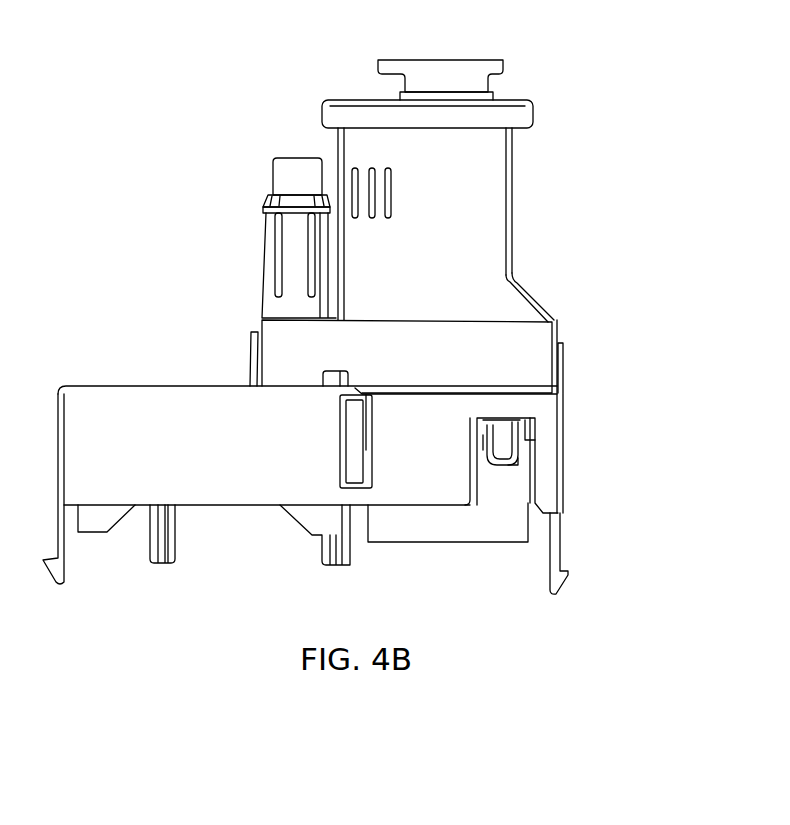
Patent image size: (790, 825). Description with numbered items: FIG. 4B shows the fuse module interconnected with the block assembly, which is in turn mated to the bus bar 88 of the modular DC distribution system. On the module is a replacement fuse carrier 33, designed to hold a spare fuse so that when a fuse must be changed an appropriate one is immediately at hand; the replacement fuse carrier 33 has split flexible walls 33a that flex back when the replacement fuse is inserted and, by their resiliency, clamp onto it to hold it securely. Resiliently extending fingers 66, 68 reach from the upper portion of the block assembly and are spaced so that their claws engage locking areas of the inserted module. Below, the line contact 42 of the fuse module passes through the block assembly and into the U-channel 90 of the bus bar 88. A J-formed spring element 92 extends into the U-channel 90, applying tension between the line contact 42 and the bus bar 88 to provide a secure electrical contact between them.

The replacement fuse carrier 33 is at (227, 190).
The split flexible walls 33a is at (273, 258).
The resiliently extending finger 66 is at (248, 342).
The resiliently extending finger 68 is at (565, 348).
The line contact 42 is at (512, 442).
The J-formed spring element 92 is at (512, 463).
The U-channel 90 is at (493, 467).
The bus bar 88 is at (417, 523).